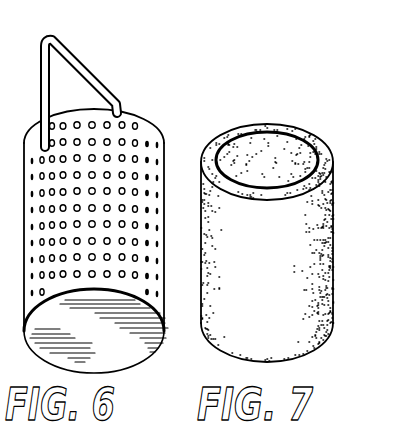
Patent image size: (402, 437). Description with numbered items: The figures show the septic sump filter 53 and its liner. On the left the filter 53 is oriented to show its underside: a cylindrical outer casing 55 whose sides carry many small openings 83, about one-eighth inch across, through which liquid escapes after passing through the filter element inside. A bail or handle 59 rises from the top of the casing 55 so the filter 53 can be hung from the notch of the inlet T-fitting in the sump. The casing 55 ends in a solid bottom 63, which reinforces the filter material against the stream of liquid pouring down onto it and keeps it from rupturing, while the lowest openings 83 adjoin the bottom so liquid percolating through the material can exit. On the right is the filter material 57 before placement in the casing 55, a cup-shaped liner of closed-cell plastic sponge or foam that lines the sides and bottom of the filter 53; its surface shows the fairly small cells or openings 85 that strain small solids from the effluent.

In FIG. 6, the filter 53 is at (162, 125).
In FIG. 6, the outer casing 55 is at (27, 297).
In FIG. 7, the filter material 57 is at (315, 127).
In FIG. 6, the bail or handle 59 is at (107, 86).
In FIG. 6, the solid bottom 63 is at (115, 345).
In FIG. 6, the openings 83 is at (137, 180).
In FIG. 7, the cells or openings 85 is at (268, 131).